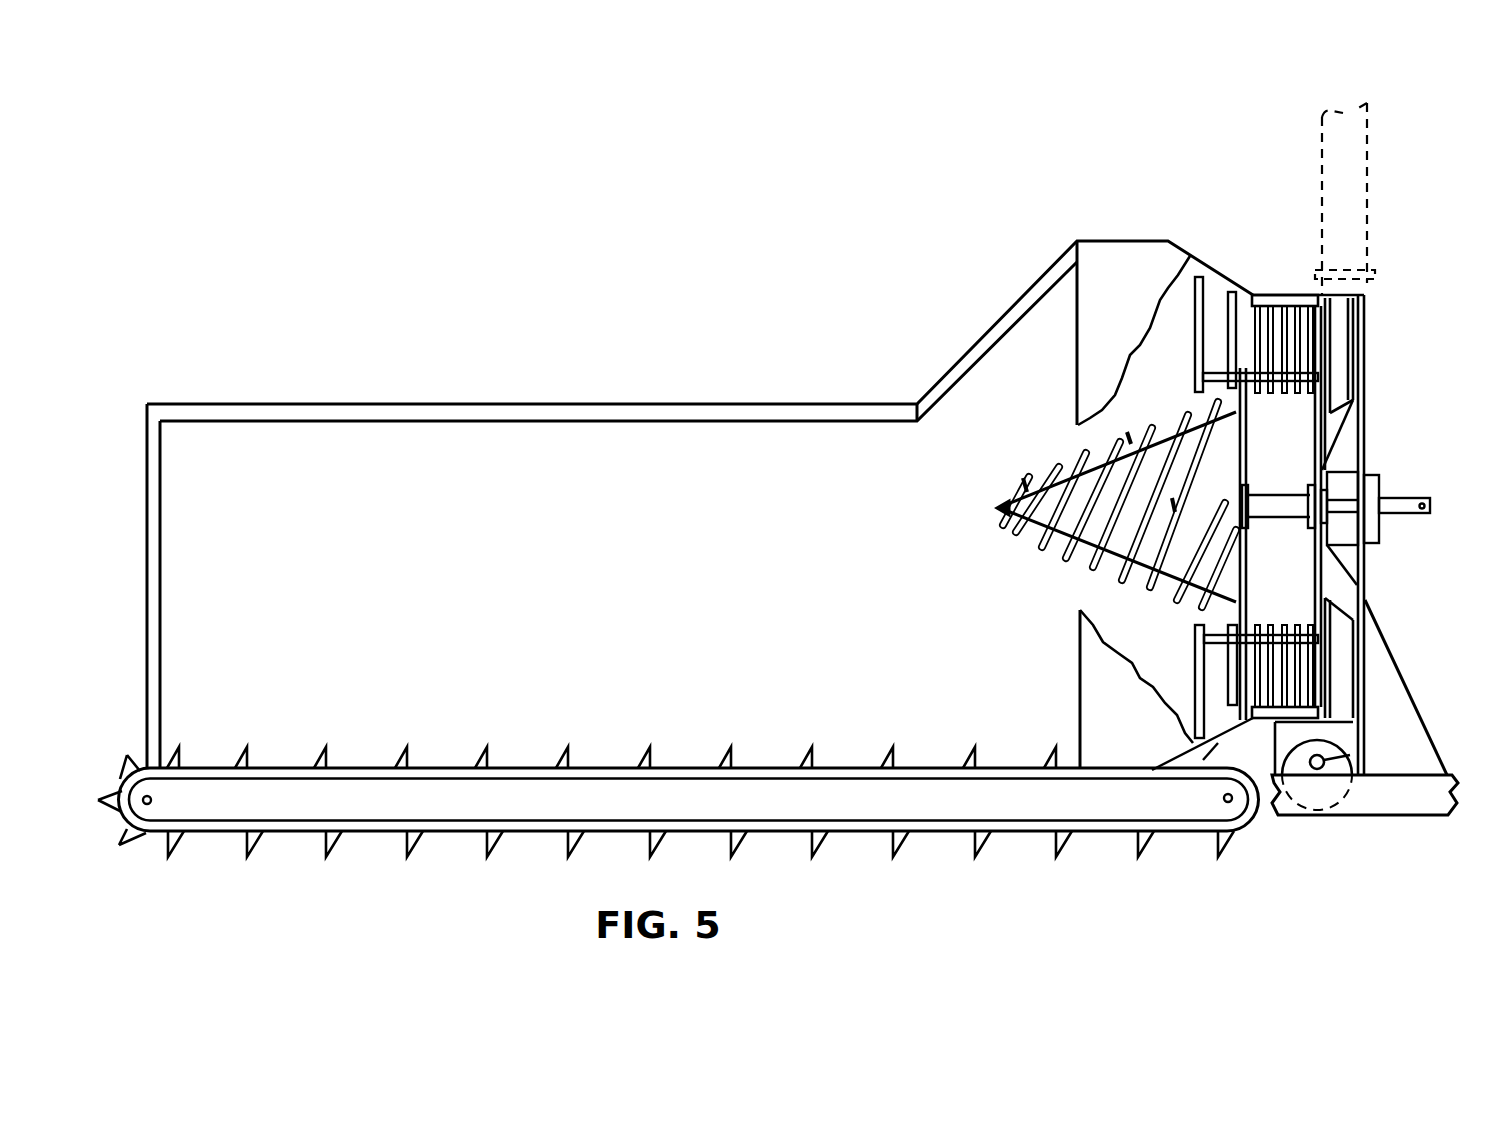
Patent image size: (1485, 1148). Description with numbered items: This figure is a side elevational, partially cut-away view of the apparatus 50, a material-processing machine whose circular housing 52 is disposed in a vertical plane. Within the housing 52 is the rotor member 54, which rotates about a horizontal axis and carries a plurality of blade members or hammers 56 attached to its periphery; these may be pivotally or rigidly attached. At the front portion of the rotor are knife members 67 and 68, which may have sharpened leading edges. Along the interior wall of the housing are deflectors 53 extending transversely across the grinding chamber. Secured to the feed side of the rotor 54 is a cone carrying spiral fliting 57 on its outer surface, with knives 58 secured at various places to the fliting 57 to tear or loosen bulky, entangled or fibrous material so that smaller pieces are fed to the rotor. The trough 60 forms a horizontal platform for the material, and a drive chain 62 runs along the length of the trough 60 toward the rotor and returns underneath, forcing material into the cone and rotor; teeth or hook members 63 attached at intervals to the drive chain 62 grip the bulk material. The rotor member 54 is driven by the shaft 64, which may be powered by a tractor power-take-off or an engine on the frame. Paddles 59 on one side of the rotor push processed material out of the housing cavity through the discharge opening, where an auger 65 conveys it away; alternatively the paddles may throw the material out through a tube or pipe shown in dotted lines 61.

The apparatus 50 is at (711, 362).
The circular housing 52 is at (1311, 290).
The deflectors 53 is at (1290, 295).
The rotor member 54 is at (1323, 443).
The blade members or hammers 56 is at (1285, 312).
The spiral fliting 57 is at (1052, 470).
The knives 58 is at (1118, 562).
The paddles 59 is at (1347, 335).
The trough 60 is at (355, 464).
The dotted lines 61 is at (1367, 213).
The drive chain 62 is at (593, 766).
The teeth or hook members 63 is at (652, 765).
The shaft 64 is at (1412, 505).
The auger 65 is at (1352, 768).
The knife member 67 is at (1195, 345).
The knife member 68 is at (1230, 298).